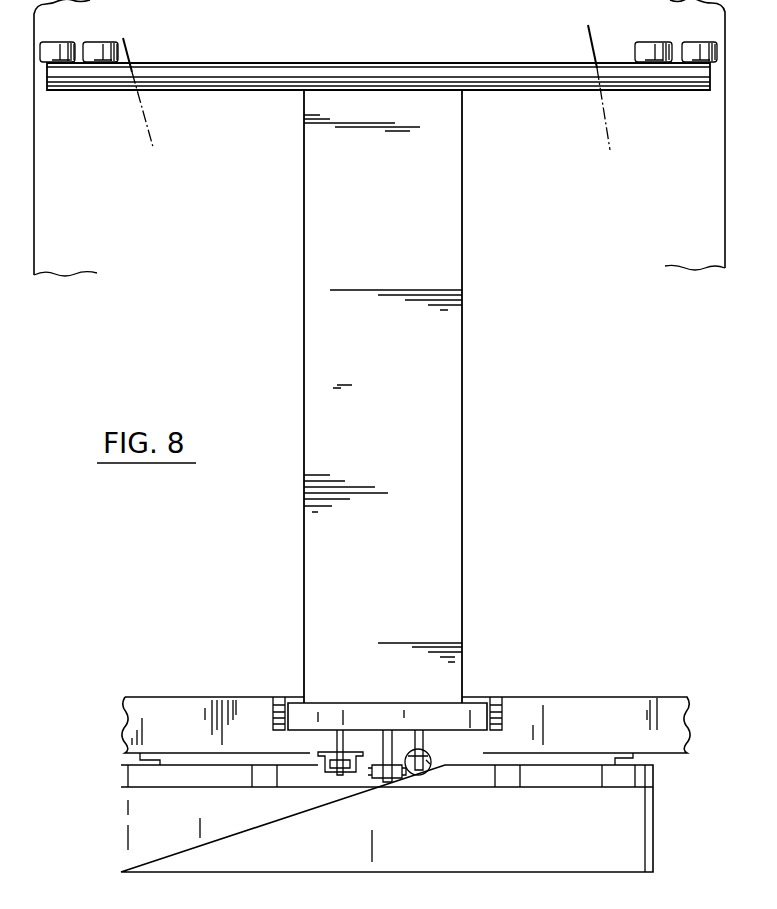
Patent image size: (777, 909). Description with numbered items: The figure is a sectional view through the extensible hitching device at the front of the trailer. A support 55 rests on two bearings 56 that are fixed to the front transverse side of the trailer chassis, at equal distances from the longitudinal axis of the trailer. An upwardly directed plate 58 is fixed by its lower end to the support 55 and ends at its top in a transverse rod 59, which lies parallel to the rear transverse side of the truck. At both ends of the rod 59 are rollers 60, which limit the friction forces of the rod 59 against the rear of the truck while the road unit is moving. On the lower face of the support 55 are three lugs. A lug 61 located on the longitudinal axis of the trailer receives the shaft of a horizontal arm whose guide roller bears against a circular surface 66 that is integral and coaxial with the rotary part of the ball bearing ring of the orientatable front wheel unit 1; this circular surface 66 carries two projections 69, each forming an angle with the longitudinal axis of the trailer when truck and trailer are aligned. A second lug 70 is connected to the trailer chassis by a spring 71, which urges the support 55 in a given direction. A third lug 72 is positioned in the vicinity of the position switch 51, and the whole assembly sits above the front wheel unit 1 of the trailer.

The front wheel unit 1 is at (185, 855).
The position switch 51 is at (327, 768).
The support 55 is at (333, 710).
The bearings 56 is at (270, 698).
The upwardly directed plate 58 is at (412, 389).
The transverse rod 59 is at (258, 63).
The rollers 60 is at (100, 42).
The lug 61 is at (376, 728).
The circular surface 66 is at (365, 780).
The projections 69 is at (120, 778).
The second lug 70 is at (430, 730).
The spring 71 is at (427, 776).
The third lug 72 is at (342, 770).